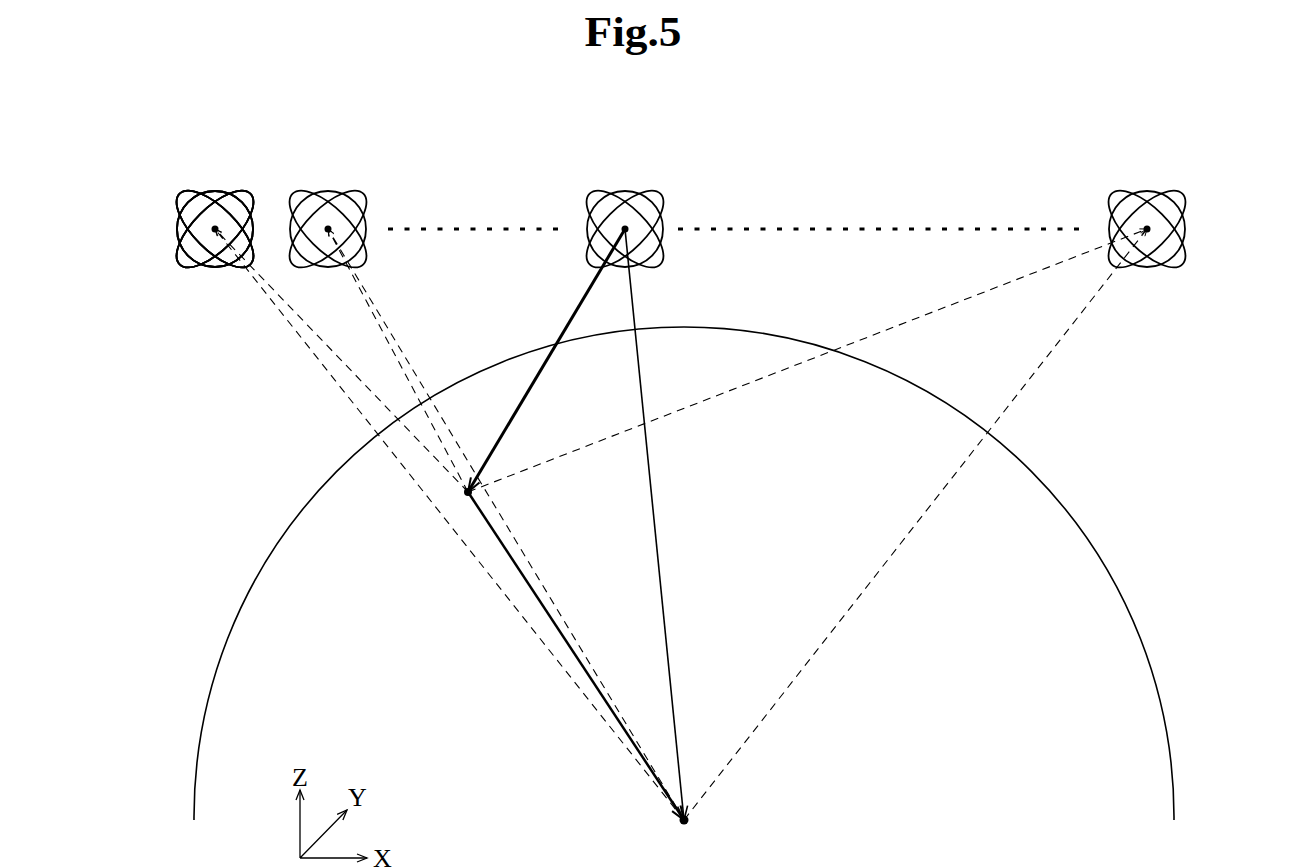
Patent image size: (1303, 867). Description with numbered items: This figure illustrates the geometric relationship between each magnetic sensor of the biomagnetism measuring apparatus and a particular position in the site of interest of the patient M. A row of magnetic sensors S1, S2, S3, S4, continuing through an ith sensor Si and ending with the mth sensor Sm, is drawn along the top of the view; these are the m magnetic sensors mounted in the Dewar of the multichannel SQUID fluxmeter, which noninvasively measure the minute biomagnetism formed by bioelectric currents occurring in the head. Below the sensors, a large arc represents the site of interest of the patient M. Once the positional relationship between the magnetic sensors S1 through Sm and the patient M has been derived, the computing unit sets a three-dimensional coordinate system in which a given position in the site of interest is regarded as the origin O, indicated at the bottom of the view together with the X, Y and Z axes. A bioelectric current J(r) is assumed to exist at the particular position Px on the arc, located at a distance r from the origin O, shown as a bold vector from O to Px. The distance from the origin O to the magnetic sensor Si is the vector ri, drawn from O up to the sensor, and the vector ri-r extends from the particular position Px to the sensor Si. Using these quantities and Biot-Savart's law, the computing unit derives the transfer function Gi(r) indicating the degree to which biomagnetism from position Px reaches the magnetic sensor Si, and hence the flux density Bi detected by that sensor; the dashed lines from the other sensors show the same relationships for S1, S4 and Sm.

The magnetic sensor S1 is at (183, 193).
The magnetic sensor S2 is at (217, 197).
The magnetic sensor S3 is at (247, 193).
The magnetic sensor S4 is at (302, 190).
The magnetic sensor Si is at (630, 192).
The magnetic sensor Sm is at (1180, 190).
The patient M is at (1165, 733).
The particular position Px is at (467, 493).
The origin O is at (680, 817).
The distance from origin to particular position r is at (517, 567).
The distance from origin to magnetic sensor ri is at (657, 557).
The vector from particular position to magnetic sensor ri-r is at (563, 330).